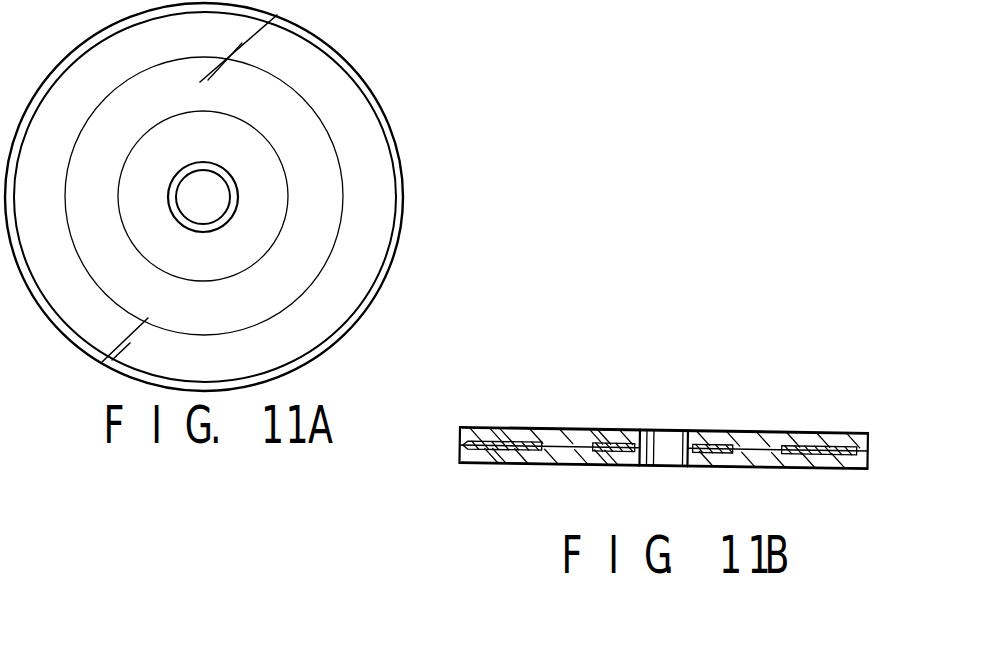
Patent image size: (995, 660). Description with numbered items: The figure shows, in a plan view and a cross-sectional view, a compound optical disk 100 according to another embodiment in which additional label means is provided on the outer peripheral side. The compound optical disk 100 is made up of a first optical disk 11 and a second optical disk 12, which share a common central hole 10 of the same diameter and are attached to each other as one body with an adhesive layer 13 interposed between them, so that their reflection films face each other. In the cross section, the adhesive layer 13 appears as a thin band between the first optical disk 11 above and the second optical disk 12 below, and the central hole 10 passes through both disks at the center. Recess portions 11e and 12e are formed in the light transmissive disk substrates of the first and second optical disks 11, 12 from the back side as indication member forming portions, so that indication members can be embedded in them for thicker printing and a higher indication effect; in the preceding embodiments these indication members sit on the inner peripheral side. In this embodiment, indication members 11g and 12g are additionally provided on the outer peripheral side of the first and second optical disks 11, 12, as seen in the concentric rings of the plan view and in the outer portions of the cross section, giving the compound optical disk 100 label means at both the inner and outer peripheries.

In FIG. 11A, the compound optical disk 100 is at (204, 197).
In FIG. 11B, the compound optical disk 100 is at (727, 422).
In FIG. 11A, the central hole 10 is at (203, 197).
In FIG. 11B, the central hole 10 is at (662, 463).
In FIG. 11B, the first optical disk 11 is at (460, 432).
In FIG. 11B, the second optical disk 12 is at (460, 461).
In FIG. 11B, the adhesive layer 13 is at (462, 445).
In FIG. 11A, the recess portion 11e is at (253, 138).
In FIG. 11B, the recess portion 11e is at (609, 440).
In FIG. 11A, the indication member 11g is at (367, 144).
In FIG. 11B, the indication member 11g is at (506, 440).
In FIG. 11B, the recess portion 12e is at (598, 452).
In FIG. 11B, the indication member 12g is at (497, 452).